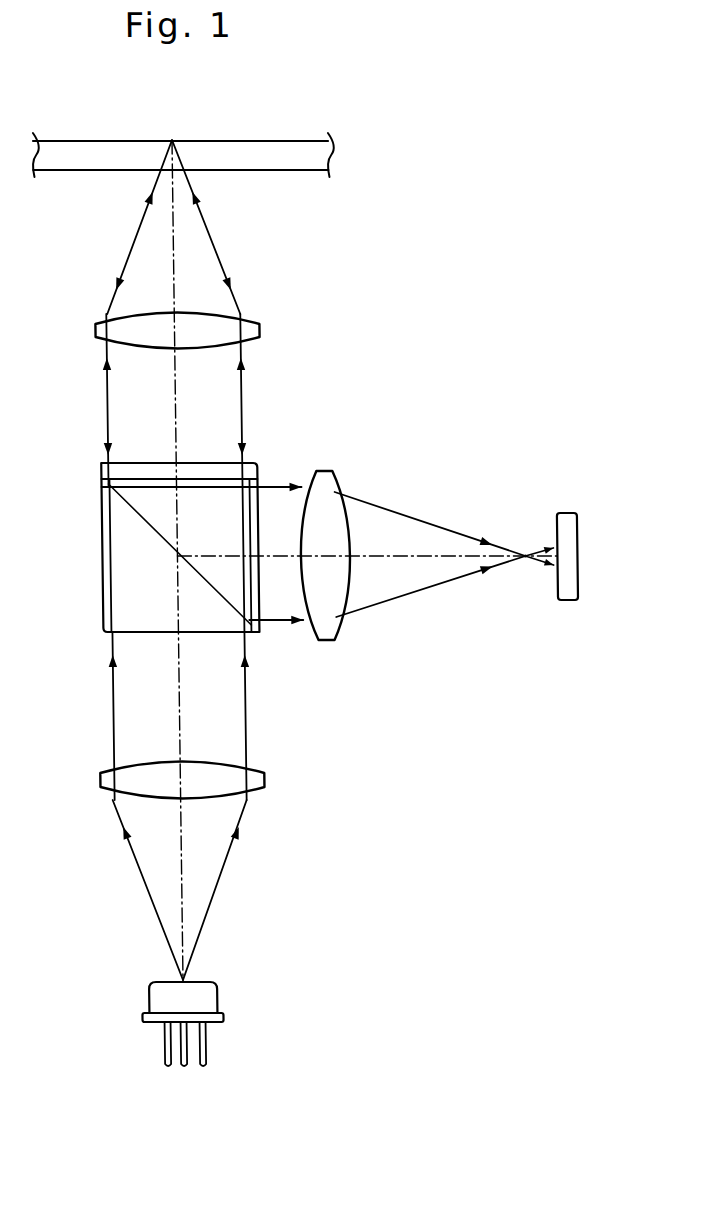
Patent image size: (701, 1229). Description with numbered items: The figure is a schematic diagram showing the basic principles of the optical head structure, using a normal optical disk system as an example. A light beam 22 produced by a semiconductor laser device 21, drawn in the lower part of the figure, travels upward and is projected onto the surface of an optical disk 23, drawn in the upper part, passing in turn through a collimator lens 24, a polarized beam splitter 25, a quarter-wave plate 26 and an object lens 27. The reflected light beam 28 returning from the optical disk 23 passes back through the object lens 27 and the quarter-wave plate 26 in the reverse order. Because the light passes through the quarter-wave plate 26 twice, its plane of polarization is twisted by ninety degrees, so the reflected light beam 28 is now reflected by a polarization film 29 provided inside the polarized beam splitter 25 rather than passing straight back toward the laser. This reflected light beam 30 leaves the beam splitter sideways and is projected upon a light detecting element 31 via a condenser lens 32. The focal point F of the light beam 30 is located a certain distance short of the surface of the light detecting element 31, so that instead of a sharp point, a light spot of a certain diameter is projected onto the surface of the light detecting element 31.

The semiconductor laser device 21 is at (203, 988).
The light beam 22 is at (212, 873).
The optical disk 23 is at (266, 170).
The collimator lens 24 is at (256, 775).
The polarized beam splitter 25 is at (96, 615).
The quarter-wave plate 26 is at (247, 473).
The object lens 27 is at (257, 330).
The reflected light beam 28 is at (238, 390).
The polarization film 29 is at (134, 521).
The reflected light beam 30 is at (435, 528).
The light detecting element 31 is at (558, 513).
The condenser lens 32 is at (314, 471).
The focal point F is at (519, 560).